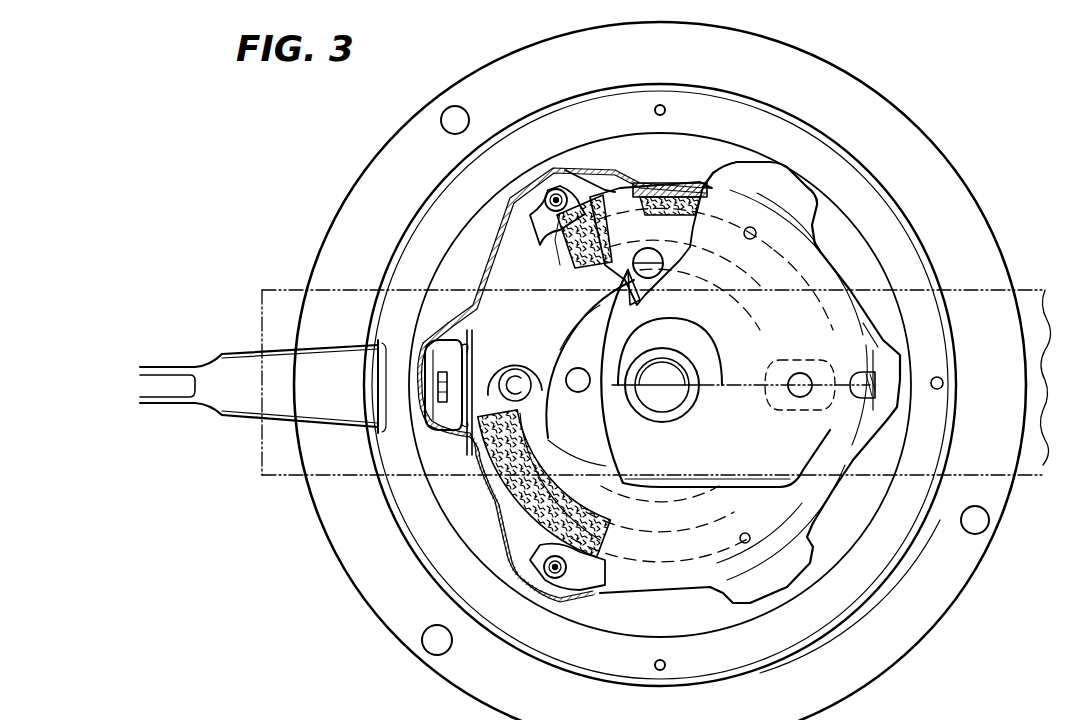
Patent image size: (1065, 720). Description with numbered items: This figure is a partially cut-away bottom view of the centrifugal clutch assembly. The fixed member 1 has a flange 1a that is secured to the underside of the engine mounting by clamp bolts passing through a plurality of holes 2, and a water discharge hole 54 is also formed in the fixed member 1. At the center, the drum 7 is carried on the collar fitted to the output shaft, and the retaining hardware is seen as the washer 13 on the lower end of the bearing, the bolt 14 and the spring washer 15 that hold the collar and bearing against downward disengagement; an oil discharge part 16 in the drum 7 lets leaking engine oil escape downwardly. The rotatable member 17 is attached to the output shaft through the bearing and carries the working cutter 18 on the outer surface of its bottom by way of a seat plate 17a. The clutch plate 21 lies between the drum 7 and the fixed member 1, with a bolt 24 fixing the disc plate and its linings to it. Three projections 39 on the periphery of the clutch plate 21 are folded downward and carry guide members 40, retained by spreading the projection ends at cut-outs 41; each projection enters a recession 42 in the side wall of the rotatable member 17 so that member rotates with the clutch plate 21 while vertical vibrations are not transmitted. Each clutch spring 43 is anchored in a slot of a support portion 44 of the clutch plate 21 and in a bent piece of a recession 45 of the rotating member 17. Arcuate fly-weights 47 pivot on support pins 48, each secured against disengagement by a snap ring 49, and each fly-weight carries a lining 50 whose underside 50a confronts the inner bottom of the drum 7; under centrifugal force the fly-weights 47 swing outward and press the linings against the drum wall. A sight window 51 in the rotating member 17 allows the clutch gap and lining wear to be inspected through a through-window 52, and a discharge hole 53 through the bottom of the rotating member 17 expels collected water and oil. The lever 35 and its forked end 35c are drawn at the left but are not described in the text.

The fixed member 1 is at (882, 78).
The flange 1a is at (816, 62).
The holes 2 is at (422, 652).
The drum 7 is at (646, 192).
The washer 13 is at (670, 352).
The bolt 14 is at (672, 378).
The spring washer 15 is at (683, 372).
The oil discharge part 16 is at (665, 266).
The rotatable member 17 is at (852, 496).
The seat plate 17a is at (782, 483).
The working cutter 18 is at (1043, 290).
The clutch plate 21 is at (484, 284).
The bolt 24 is at (580, 372).
The actuating lever 35 is at (274, 344).
The fork end 35c is at (210, 376).
The projections 39 is at (457, 398).
The guide members 40 is at (448, 358).
The cut-outs 41 is at (437, 392).
The recessions 42 is at (795, 190).
The clutch spring 43 is at (556, 188).
The support portions 44 is at (582, 195).
The recessions 45 is at (528, 188).
The fly-weights 47 is at (590, 280).
The support pin 48 is at (512, 368).
The snap ring 49 is at (508, 375).
The lining 50 is at (562, 248).
The underside of lining 50a is at (740, 170).
The sight window 51 is at (665, 184).
The through-window 52 is at (692, 190).
The discharge hole 53 is at (661, 104).
The water discharge hole 54 is at (943, 381).